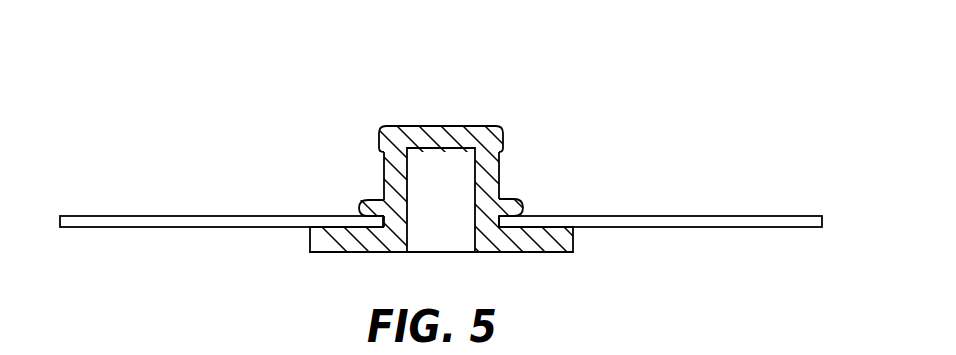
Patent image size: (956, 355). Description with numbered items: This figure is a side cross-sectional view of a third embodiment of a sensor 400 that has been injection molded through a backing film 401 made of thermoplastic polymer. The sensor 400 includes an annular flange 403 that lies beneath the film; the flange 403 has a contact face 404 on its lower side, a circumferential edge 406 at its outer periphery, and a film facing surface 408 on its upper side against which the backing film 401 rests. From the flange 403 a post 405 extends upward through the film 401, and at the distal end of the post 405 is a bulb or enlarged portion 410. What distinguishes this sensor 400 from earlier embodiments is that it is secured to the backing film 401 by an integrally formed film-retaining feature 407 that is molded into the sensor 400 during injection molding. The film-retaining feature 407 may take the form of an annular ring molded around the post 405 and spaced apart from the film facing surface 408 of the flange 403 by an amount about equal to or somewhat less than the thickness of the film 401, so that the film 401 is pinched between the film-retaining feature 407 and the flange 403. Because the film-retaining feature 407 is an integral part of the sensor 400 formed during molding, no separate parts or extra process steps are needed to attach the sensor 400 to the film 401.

The sensor 400 is at (431, 99).
The backing film 401 is at (124, 216).
The annular flange 403 is at (513, 243).
The contact face 404 is at (377, 252).
The post 405 is at (393, 177).
The circumferential edge 406 is at (310, 238).
The film-retaining feature 407 is at (513, 203).
The film facing surface 408 is at (540, 227).
The bulb or enlarged portion 410 is at (497, 137).